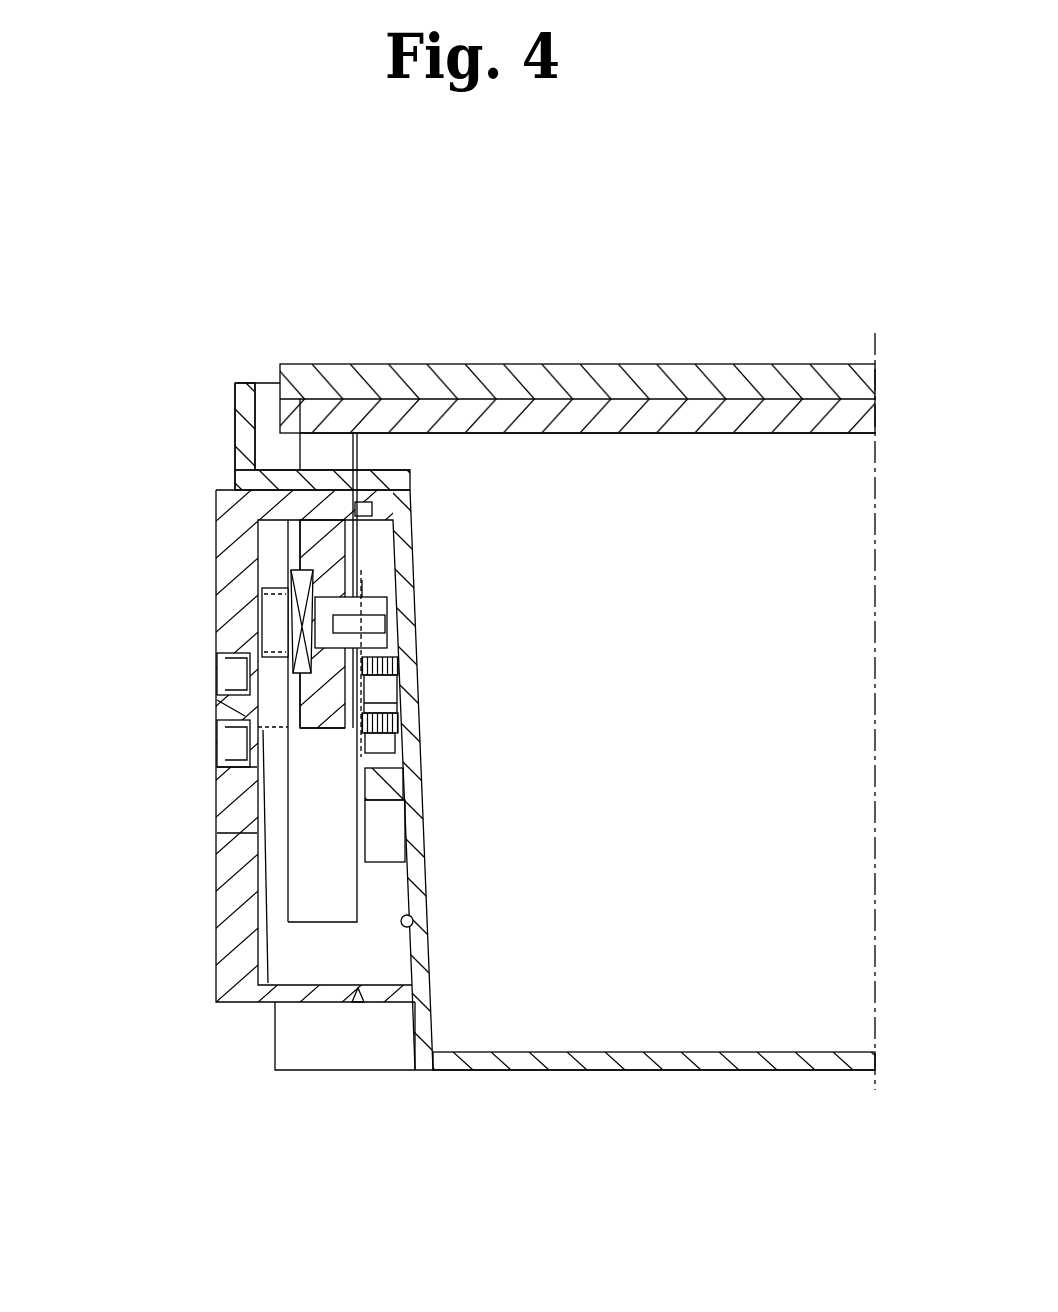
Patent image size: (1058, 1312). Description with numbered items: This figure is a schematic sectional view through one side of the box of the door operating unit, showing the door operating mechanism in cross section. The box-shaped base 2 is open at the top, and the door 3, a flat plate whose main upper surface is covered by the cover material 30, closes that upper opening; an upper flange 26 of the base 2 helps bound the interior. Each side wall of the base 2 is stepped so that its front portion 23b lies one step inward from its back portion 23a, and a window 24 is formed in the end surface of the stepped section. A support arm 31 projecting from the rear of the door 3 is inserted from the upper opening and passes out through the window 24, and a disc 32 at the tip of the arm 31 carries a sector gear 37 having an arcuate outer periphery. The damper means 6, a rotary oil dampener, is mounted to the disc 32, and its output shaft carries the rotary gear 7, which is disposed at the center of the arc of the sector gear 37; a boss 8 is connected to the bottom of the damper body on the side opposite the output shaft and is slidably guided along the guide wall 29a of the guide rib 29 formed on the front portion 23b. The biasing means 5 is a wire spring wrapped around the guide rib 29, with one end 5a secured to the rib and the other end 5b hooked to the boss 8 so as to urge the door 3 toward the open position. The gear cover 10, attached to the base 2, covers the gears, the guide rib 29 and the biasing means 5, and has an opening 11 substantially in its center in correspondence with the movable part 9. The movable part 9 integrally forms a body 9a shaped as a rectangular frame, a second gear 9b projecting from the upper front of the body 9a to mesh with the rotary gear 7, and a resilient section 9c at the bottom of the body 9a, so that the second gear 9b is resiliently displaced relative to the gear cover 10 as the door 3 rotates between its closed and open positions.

The box-shaped base 2 is at (735, 1085).
The door 3 is at (716, 348).
The biasing means 5 is at (413, 667).
The one end of the wire spring 5a is at (410, 763).
The other end of the wire spring 5b is at (362, 597).
The damper means 6 is at (179, 607).
The rotary gear 7 is at (282, 615).
The boss 8 is at (402, 640).
The movable part 9 is at (140, 740).
The body 9a is at (217, 647).
The second gear 9b is at (258, 735).
The resilient section 9c is at (175, 800).
The gear cover 10 is at (200, 906).
The opening 11 is at (250, 652).
The back portion of the side wall 23a is at (266, 1060).
The front portion of the side wall 23b is at (413, 930).
The window 24 is at (312, 913).
The upper flange 26 is at (235, 404).
The guide rib 29 is at (385, 588).
The guide wall 29a is at (497, 663).
The cover material 30 is at (563, 378).
The support arm 31 is at (313, 448).
The disc 32 is at (340, 543).
The sector gear 37 is at (322, 733).